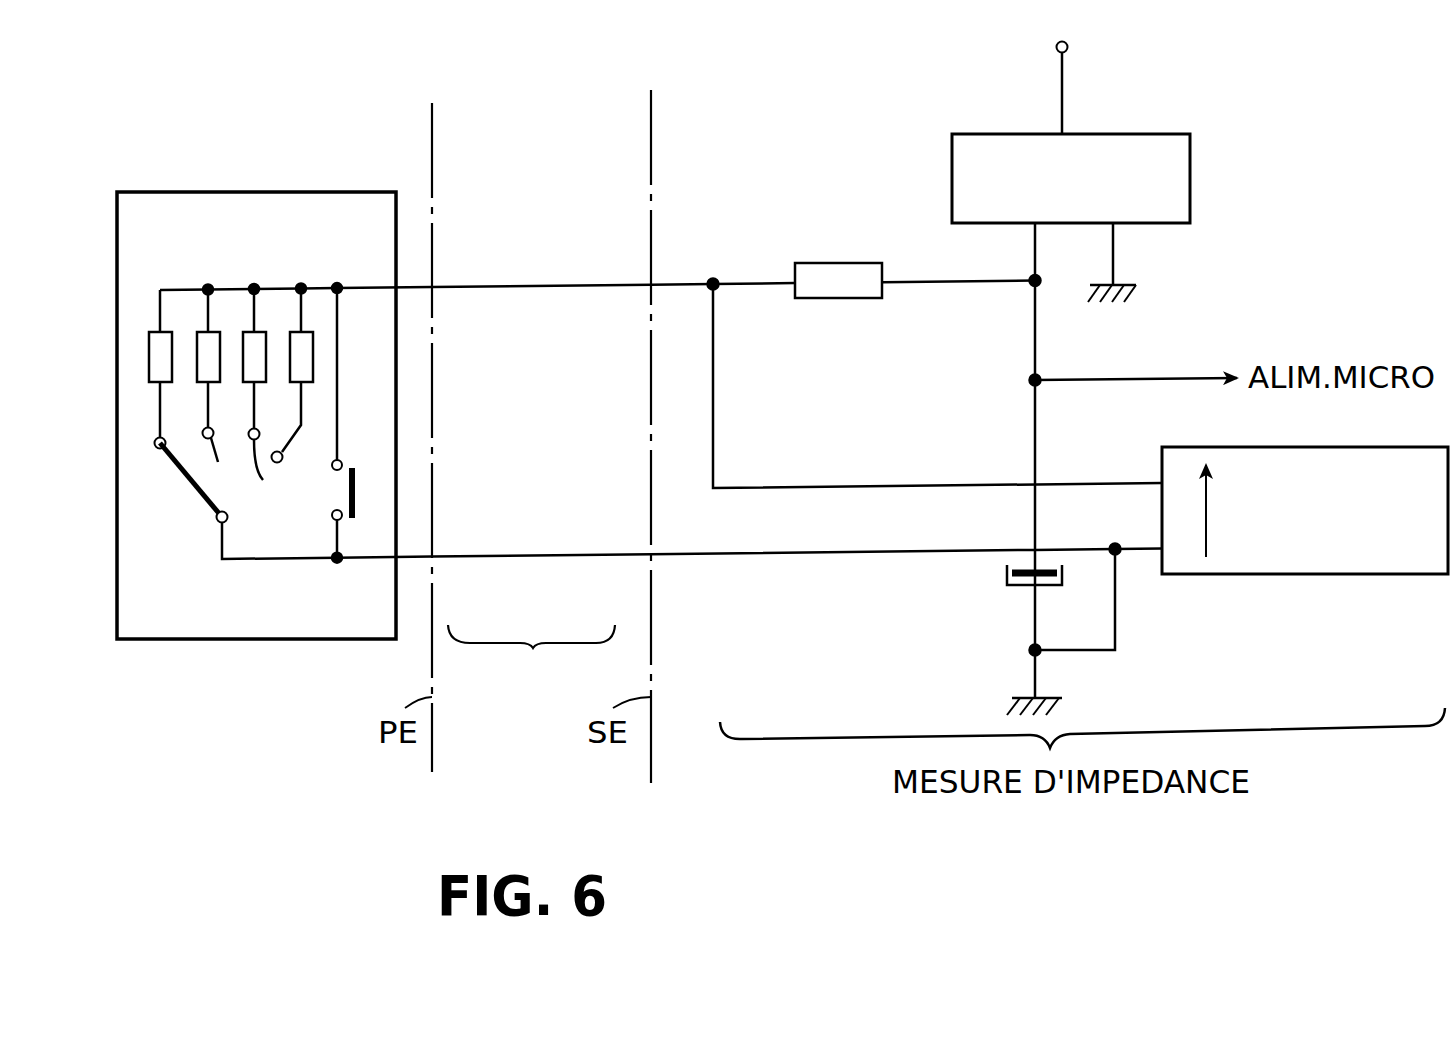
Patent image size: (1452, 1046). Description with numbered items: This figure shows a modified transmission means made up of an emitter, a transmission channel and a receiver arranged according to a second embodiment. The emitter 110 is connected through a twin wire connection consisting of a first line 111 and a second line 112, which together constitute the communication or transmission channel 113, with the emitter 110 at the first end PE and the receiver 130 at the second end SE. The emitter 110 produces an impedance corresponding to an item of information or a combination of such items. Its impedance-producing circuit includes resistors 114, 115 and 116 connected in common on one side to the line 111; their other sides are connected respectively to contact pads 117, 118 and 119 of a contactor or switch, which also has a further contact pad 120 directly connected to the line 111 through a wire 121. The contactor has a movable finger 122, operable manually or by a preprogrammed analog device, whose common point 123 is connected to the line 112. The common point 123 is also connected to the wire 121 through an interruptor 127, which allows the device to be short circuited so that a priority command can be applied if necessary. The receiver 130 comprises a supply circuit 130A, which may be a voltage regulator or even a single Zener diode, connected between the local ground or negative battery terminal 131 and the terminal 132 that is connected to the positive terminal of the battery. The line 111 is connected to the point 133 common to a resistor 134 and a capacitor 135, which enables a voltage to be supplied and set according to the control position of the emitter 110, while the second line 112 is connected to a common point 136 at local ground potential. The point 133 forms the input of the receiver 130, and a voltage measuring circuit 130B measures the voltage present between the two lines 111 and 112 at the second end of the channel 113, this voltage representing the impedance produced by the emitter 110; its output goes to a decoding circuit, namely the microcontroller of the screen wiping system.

The emitter 110 is at (255, 178).
The first line 111 is at (494, 280).
The second line 112 is at (500, 555).
The transmission channel 113 is at (531, 656).
The resistor 114 is at (147, 340).
The resistor 115 is at (197, 345).
The resistor 116 is at (263, 350).
The contact pad 117 is at (155, 450).
The contact pad 118 is at (219, 468).
The contact pad 119 is at (275, 473).
The further contact pad 120 is at (341, 460).
The wire 121 is at (339, 365).
The movable finger 122 is at (192, 485).
The common point 123 is at (220, 527).
The interruptor 127 is at (356, 487).
The receiver 130 is at (760, 172).
The supply circuit 130A is at (987, 130).
The voltage measuring circuit 130B is at (1218, 445).
The negative terminal 131 is at (1125, 290).
The terminal 132 is at (1108, 80).
The point 133 is at (745, 258).
The resistor 134 is at (830, 262).
The capacitor 135 is at (1012, 588).
The common point 136 is at (1045, 697).